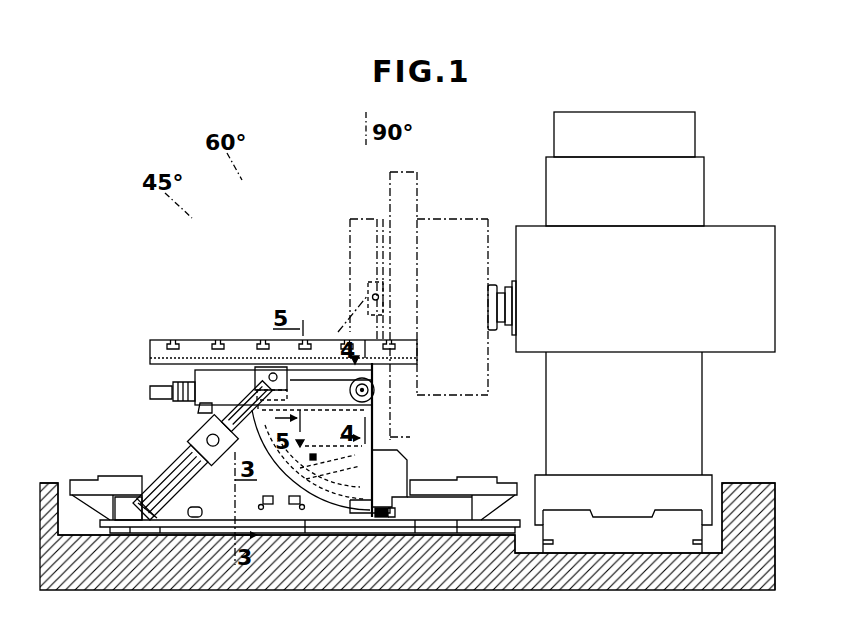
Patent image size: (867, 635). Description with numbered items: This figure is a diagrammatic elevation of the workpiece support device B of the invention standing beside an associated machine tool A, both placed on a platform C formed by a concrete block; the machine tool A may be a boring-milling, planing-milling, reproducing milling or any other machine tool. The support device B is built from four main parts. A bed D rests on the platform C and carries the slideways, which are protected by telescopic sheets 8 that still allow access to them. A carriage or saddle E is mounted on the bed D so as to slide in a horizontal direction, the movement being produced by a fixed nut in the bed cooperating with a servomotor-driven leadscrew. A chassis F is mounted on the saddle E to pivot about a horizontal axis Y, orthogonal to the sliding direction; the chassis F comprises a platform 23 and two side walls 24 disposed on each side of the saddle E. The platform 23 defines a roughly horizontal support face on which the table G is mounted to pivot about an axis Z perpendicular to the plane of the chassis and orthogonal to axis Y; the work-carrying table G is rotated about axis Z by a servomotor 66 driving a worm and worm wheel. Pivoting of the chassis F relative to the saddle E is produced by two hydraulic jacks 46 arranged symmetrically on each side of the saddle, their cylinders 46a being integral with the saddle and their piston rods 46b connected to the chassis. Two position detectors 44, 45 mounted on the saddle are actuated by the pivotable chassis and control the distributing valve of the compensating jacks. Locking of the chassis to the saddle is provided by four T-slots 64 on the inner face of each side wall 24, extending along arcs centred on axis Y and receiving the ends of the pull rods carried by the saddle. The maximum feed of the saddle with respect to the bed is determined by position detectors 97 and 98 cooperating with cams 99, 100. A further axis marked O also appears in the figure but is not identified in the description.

The machine tool A is at (721, 170).
The support device B is at (137, 347).
The platform C is at (603, 551).
The bed D is at (112, 528).
The carriage or saddle E is at (172, 462).
The chassis F is at (378, 417).
The table G is at (194, 340).
The horizontal axis O is at (122, 390).
The horizontal axis Y is at (372, 386).
The table pivot axis Z is at (283, 227).
The platform 23 is at (217, 393).
The hydraulic jacks 46 is at (196, 456).
The cylinders 46a is at (151, 511).
The piston rods 46b is at (262, 367).
The servomotor 66 is at (167, 396).
The telescopic sheets 8 is at (108, 478).
The cam 99 is at (194, 518).
The position detector 97 is at (272, 506).
The limit switch 98 is at (294, 506).
The side walls 24 is at (340, 507).
The cam 100 is at (391, 513).
The T-slots 64 is at (439, 507).
The position detector 44 is at (370, 458).
The position detector 45 is at (298, 444).